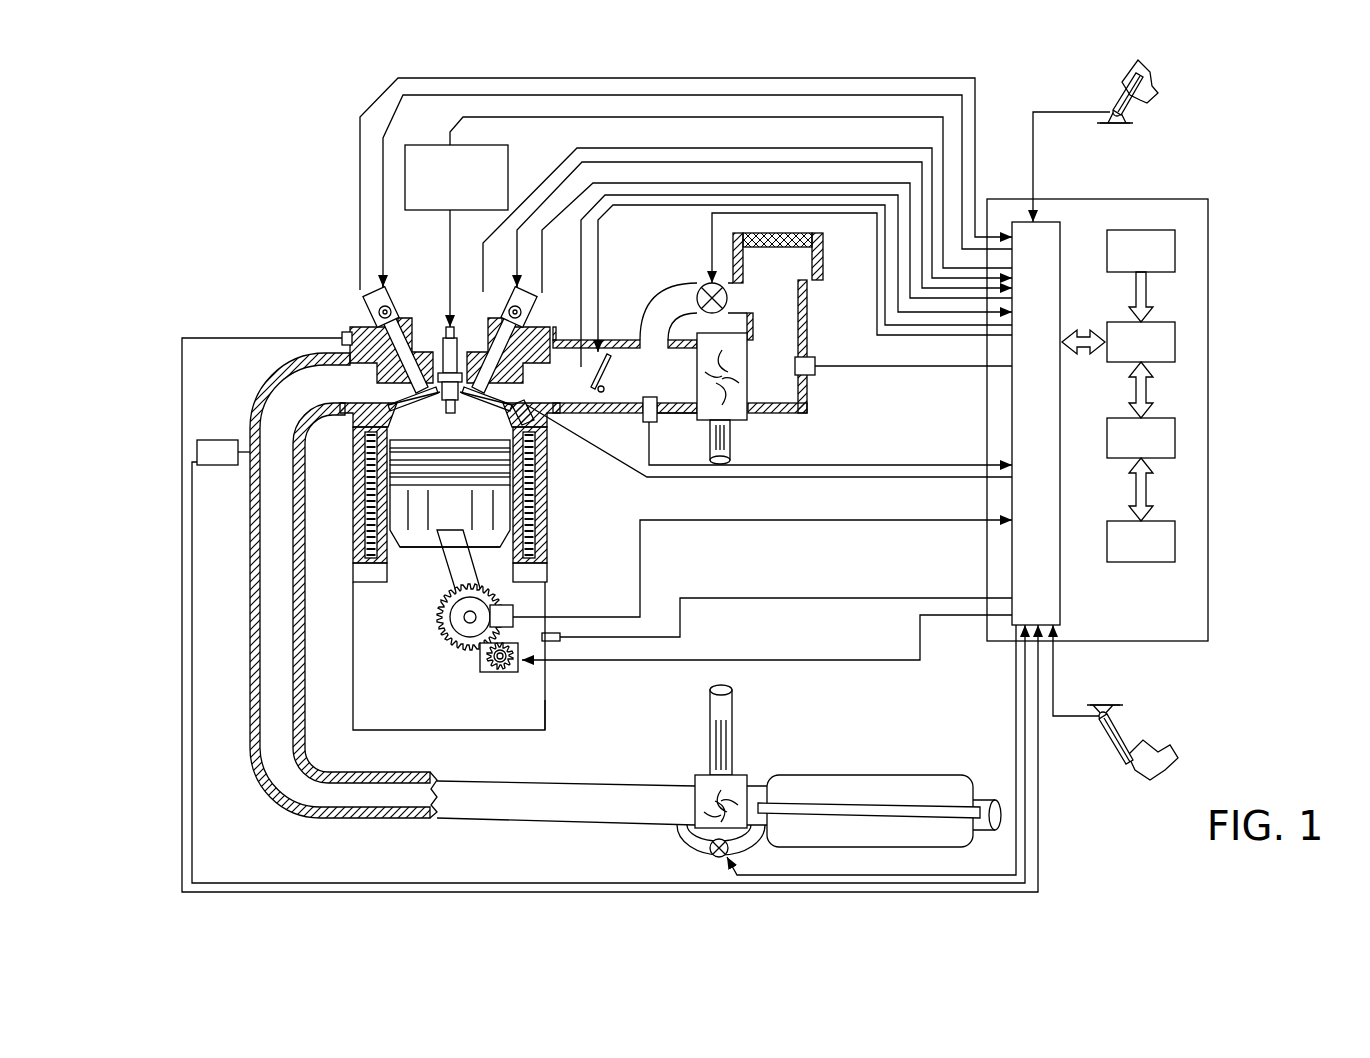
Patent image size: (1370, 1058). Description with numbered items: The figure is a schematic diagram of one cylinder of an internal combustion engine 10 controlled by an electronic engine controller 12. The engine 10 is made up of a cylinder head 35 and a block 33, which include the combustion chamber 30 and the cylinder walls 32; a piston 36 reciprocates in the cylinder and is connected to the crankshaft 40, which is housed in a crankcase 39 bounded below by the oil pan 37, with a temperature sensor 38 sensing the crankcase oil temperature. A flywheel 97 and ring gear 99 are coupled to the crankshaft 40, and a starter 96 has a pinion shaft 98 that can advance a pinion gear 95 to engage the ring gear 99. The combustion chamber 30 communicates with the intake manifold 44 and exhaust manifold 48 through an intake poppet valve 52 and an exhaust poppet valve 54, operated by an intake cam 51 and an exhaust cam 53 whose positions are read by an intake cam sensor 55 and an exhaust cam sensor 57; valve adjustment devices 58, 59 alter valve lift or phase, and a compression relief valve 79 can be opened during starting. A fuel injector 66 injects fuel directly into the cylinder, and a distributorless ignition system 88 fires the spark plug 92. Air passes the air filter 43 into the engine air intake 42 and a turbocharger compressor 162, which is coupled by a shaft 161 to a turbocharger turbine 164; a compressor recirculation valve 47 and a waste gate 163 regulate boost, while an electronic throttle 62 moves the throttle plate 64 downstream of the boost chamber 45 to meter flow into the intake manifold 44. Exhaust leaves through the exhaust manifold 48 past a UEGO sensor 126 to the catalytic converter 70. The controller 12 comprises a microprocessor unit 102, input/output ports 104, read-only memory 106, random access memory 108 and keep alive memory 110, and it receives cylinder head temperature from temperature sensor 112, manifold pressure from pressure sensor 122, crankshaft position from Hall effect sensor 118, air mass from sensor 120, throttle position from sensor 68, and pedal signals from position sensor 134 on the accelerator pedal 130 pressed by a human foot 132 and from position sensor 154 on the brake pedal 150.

The internal combustion engine 10 is at (293, 282).
The electronic engine controller 12 is at (1145, 403).
The combustion chamber 30 is at (448, 423).
The cylinder walls 32 is at (397, 565).
The block 33 is at (352, 467).
The cylinder head 35 is at (347, 328).
The piston 36 is at (437, 517).
The oil pan 37 is at (545, 710).
The temperature sensor 38 is at (562, 640).
The crankcase 39 is at (368, 663).
The crankshaft 40 is at (457, 647).
The engine air intake 42 is at (655, 258).
The air filter 43 is at (795, 248).
The intake manifold 44 is at (676, 376).
The boost chamber 45 is at (670, 389).
The compressor recirculation valve 47 is at (705, 283).
The exhaust manifold 48 is at (472, 589).
The intake cam 51 is at (503, 260).
The intake poppet valve 52 is at (505, 380).
The exhaust cam 53 is at (406, 260).
The exhaust poppet valve 54 is at (402, 398).
The intake cam sensor 55 is at (530, 322).
The exhaust cam sensor 57 is at (368, 298).
The valve adjustment device 58 is at (398, 322).
The valve adjustment device 59 is at (528, 293).
The electronic throttle 62 is at (609, 358).
The throttle plate 64 is at (604, 390).
The fuel injector 66 is at (558, 436).
The throttle position sensor 68 is at (581, 360).
The catalytic converter 70 is at (822, 775).
The compression relief valve 79 is at (455, 340).
The distributorless ignition system 88 is at (408, 145).
The spark plug 92 is at (446, 330).
The pinion gear 95 is at (502, 672).
The starter 96 is at (515, 673).
The flywheel 97 is at (440, 627).
The pinion shaft 98 is at (485, 667).
The ring gear 99 is at (470, 660).
The microprocessor unit 102 is at (1178, 345).
The input/output ports 104 is at (1062, 232).
The read-only memory 106 is at (1178, 250).
The random access memory 108 is at (1178, 447).
The keep alive memory 110 is at (1178, 548).
The temperature sensor 112 is at (338, 335).
The Hall effect sensor 118 is at (518, 610).
The air mass sensor 120 is at (816, 362).
The pressure sensor 122 is at (643, 422).
The Universal Exhaust Gas Oxygen (UEGO) sensor 126 is at (221, 440).
The accelerator pedal 130 is at (1102, 102).
The human foot 132 is at (1150, 80).
The position sensor 134 is at (1133, 115).
The brake pedal 150 is at (1120, 768).
The position sensor 154 is at (1100, 713).
The shaft 161 is at (708, 440).
The turbocharger compressor 162 is at (735, 410).
The waste gate 163 is at (710, 852).
The turbocharger turbine 164 is at (697, 775).